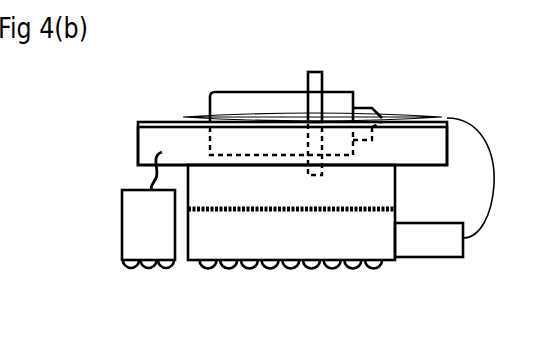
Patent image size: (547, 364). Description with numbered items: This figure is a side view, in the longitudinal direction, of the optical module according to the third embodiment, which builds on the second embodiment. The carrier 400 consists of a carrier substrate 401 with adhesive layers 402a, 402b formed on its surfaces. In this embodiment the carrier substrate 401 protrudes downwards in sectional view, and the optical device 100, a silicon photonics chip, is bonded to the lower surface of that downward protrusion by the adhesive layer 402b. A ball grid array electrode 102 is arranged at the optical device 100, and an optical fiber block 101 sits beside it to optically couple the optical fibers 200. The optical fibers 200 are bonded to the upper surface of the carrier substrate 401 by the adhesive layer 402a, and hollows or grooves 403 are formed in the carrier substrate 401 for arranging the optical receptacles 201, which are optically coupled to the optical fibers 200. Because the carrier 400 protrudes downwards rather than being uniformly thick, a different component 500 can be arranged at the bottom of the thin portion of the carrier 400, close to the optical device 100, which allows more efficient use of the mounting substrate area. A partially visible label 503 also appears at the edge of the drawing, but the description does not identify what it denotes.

The optical device 100 is at (188, 264).
The optical fiber block 101 is at (430, 247).
The ball grid array (BGA) electrode 102 is at (307, 268).
The optical fibers 200 is at (483, 138).
The optical receptacles 201 is at (263, 92).
The carrier 400 is at (117, 125).
The carrier substrate 401 is at (152, 130).
The adhesive layer 402a is at (172, 122).
The adhesive layer 402b is at (395, 208).
The hollows (grooves) 403 is at (333, 130).
The different component (another component) 500 is at (121, 243).
The clipped numeral 503 is at (14, 242).